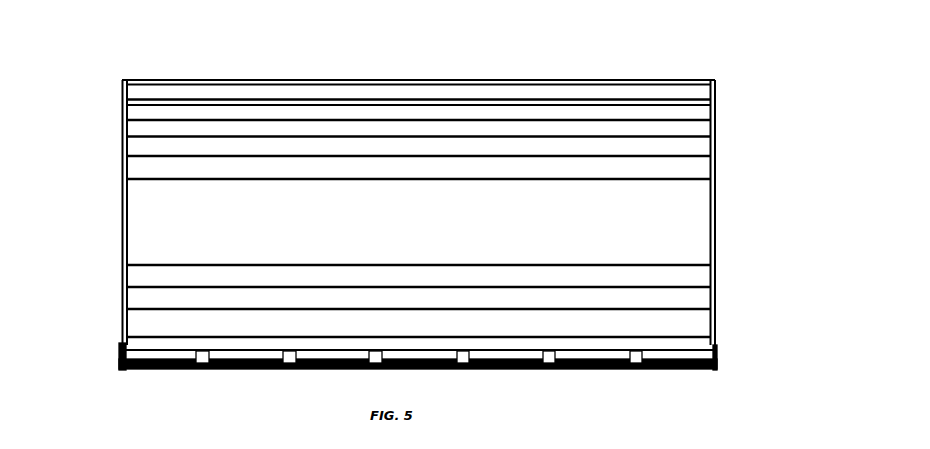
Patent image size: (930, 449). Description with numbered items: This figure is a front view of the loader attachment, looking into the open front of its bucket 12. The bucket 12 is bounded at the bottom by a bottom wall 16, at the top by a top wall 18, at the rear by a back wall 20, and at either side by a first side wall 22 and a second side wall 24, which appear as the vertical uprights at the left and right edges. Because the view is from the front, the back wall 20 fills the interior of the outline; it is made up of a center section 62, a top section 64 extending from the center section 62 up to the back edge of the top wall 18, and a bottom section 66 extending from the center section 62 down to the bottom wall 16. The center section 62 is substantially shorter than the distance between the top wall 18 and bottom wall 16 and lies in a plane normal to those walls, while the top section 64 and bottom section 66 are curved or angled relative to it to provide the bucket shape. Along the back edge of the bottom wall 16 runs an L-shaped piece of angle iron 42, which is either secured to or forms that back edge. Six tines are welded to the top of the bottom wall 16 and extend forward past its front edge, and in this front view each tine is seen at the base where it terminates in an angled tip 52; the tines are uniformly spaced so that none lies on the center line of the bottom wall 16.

The bucket 12 is at (96, 199).
The bottom wall 16 is at (320, 370).
The top wall 18 is at (466, 78).
The back wall 20 is at (43, 287).
The first side wall 22 is at (120, 167).
The second side wall 24 is at (714, 137).
The L-shaped piece of angle iron 42 is at (115, 361).
The angled tip 52 is at (195, 370).
The center section 62 is at (418, 222).
The top section 64 is at (572, 131).
The bottom section 66 is at (647, 318).